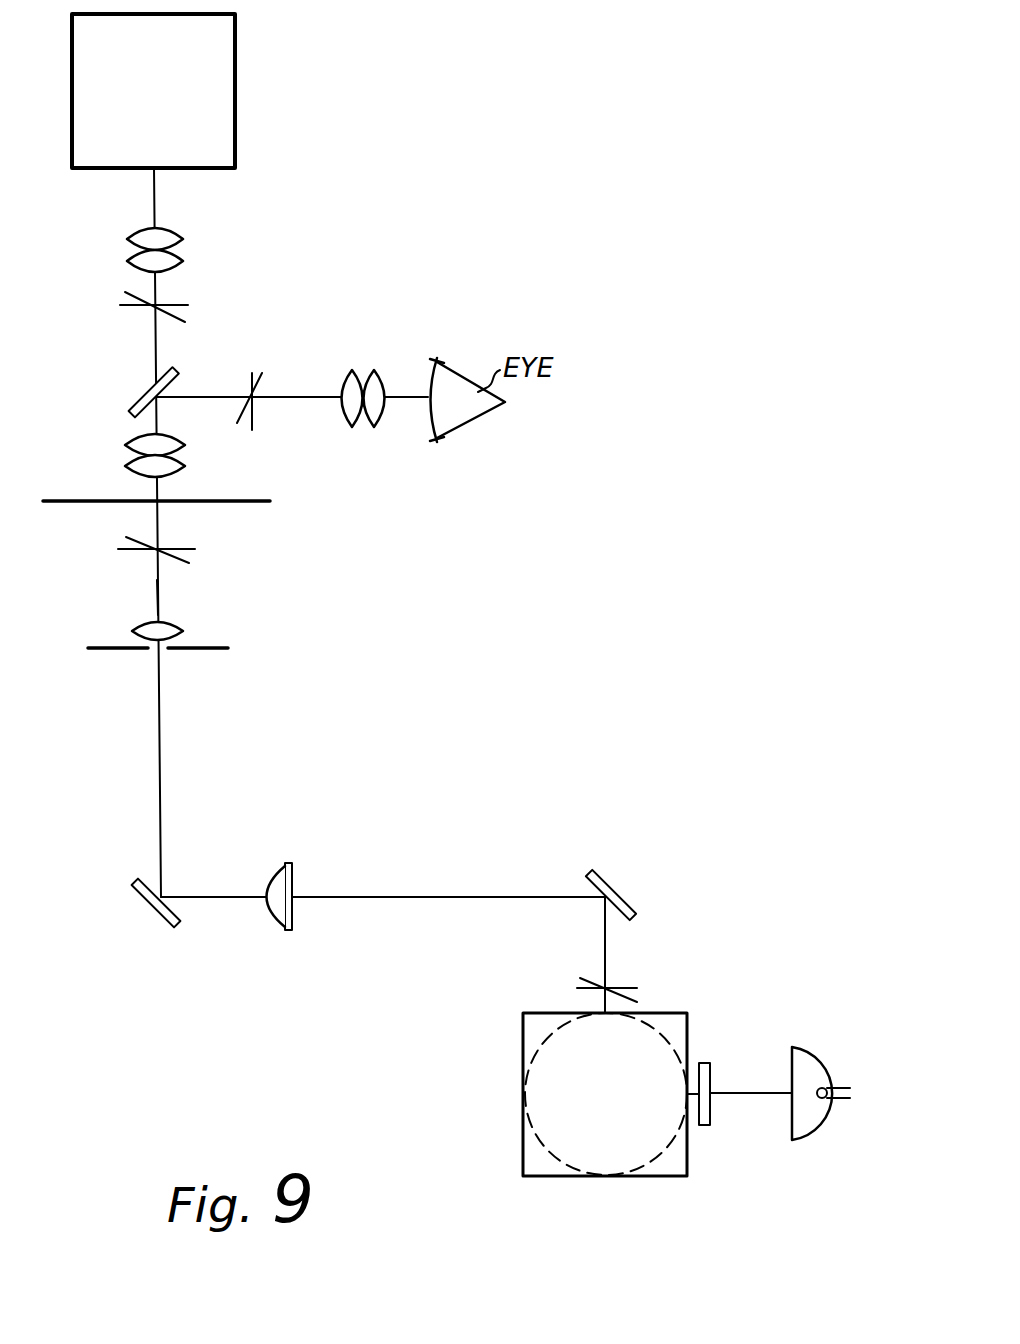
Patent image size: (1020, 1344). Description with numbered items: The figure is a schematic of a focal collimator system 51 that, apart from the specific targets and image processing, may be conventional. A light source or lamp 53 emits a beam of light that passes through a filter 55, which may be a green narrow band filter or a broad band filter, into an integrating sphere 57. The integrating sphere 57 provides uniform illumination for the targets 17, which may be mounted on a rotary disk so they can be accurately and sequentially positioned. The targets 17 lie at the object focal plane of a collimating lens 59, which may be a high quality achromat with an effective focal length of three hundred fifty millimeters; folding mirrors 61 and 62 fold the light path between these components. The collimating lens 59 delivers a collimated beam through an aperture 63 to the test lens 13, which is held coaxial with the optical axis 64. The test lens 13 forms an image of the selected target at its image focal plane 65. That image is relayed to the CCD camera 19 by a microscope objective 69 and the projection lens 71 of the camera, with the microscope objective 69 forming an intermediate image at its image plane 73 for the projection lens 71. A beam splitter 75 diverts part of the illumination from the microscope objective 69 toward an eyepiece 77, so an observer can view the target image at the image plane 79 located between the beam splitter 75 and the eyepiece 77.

The CCD camera 19 is at (236, 126).
The projection lens 71 is at (128, 240).
The image plane 73 is at (122, 300).
The beam splitter 75 is at (132, 405).
The image plane 79 is at (258, 378).
The eyepiece 77 is at (373, 375).
The microscope objective 69 is at (125, 463).
The image focal plane 65 is at (192, 561).
The optical axis 64 is at (157, 598).
The test lens 13 is at (137, 626).
The aperture 63 is at (153, 655).
The focal collimator system 51 is at (461, 659).
The folding mirror 61 is at (598, 872).
The folding mirror 62 is at (625, 988).
The targets 17 is at (578, 984).
The collimating lens 59 is at (286, 930).
The integrating sphere 57 is at (537, 1162).
The filter 55 is at (710, 1125).
The lamp 53 is at (810, 1140).